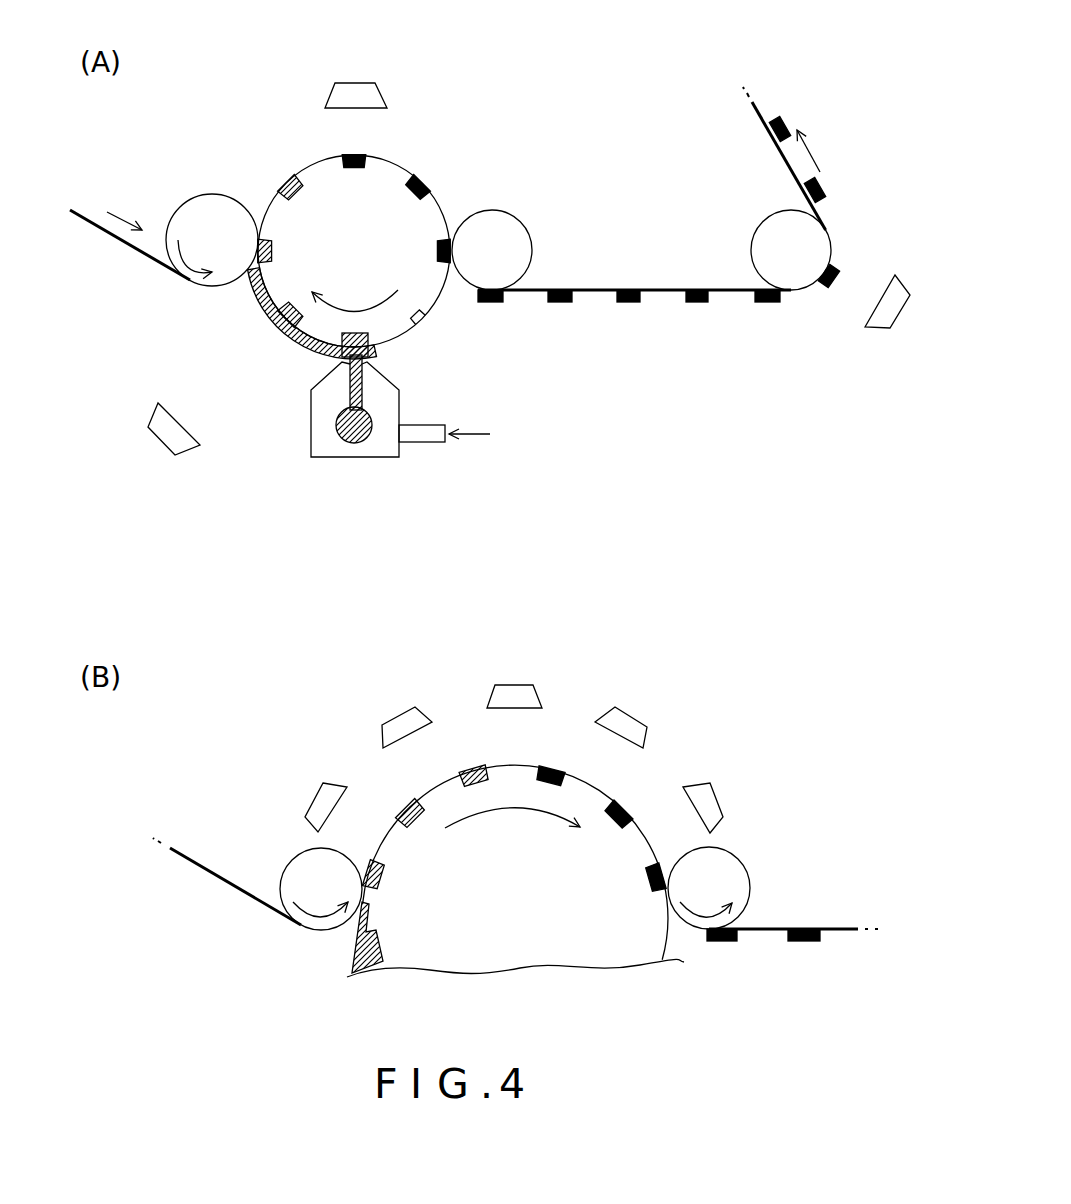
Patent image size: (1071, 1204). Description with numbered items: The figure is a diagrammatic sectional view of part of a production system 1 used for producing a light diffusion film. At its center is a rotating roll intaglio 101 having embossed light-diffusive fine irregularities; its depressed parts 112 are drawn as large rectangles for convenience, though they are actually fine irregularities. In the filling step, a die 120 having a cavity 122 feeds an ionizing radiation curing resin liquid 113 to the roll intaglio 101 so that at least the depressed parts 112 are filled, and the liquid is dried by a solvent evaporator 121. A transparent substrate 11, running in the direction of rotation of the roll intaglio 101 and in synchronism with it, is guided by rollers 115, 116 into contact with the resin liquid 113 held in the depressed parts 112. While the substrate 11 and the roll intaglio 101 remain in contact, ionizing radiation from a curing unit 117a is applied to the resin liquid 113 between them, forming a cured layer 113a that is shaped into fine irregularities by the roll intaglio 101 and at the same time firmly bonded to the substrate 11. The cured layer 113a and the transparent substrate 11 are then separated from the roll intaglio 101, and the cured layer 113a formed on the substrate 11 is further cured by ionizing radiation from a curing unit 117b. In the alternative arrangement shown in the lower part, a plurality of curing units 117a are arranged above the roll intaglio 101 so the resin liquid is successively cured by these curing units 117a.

The image forming apparatus / transfer belt 1 is at (782, 100).
The transparent substrate 11 is at (128, 245).
The roll intaglio 101 is at (392, 175).
The depressed parts 112 is at (418, 315).
The ionizing radiation curing resin liquid 113 is at (268, 318).
The cured layer 113a is at (288, 182).
The transfer roller 115 is at (195, 208).
The transfer roller 116 is at (505, 225).
The curing unit 117a is at (355, 92).
The curing unit 117b is at (883, 320).
The die 120 is at (382, 445).
The solvent evaporator 121 is at (172, 445).
The cavity 122 is at (343, 430).